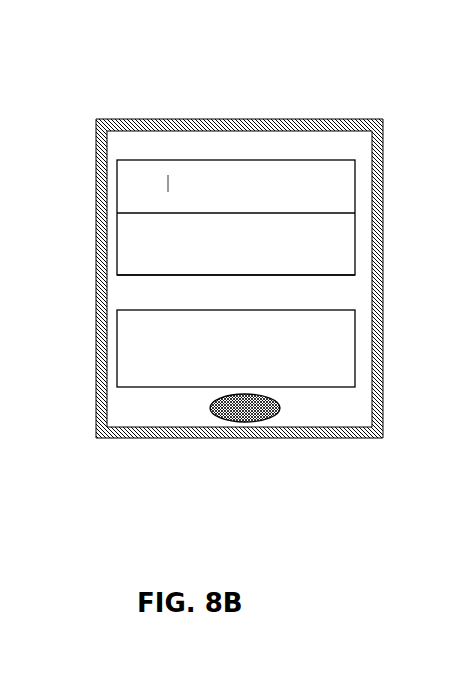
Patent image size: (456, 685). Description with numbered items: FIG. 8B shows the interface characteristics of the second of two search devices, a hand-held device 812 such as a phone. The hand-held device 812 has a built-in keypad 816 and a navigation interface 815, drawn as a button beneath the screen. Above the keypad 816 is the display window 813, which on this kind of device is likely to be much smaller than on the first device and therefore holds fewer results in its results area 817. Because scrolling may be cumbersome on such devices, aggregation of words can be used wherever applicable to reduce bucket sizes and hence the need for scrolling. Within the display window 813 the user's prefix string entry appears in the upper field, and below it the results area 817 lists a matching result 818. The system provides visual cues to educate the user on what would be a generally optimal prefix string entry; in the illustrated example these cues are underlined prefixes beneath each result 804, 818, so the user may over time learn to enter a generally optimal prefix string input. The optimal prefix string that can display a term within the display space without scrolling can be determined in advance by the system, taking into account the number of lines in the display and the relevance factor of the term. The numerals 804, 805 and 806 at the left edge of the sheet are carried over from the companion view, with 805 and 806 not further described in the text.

The result 804 is at (0, 150).
The display 805 is at (0, 230).
The housing 806 is at (13, 507).
The hand-held device 812 is at (100, 121).
The display window 813 is at (152, 160).
The navigation interface 815 is at (270, 413).
The keypad 816 is at (125, 358).
The results area 817 is at (152, 276).
The result 818 is at (135, 245).